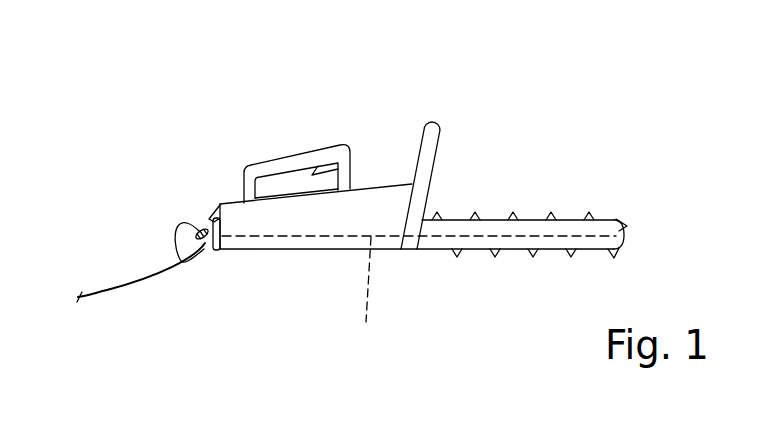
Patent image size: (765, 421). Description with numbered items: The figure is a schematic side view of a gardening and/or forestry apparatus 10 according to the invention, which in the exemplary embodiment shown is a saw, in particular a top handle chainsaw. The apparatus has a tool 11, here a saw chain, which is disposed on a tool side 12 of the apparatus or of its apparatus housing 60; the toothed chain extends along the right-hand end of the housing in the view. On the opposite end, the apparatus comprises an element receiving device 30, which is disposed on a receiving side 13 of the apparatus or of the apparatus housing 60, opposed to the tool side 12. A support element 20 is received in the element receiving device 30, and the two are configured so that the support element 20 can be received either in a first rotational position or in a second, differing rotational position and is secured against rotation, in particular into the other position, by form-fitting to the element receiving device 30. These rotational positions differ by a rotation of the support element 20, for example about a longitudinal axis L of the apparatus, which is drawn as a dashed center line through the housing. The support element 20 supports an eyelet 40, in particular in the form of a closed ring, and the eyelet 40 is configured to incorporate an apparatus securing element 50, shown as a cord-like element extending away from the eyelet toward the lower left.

The gardening and/or forestry apparatus 10 is at (306, 98).
The tool 11 is at (570, 219).
The tool side 12 is at (427, 212).
The receiving side 13 is at (211, 216).
The support element 20 is at (211, 219).
The element receiving device 30 is at (214, 251).
The eyelet 40 is at (199, 228).
The apparatus securing element 50 is at (107, 290).
The apparatus housing 60 is at (267, 250).
The longitudinal axis L is at (368, 293).